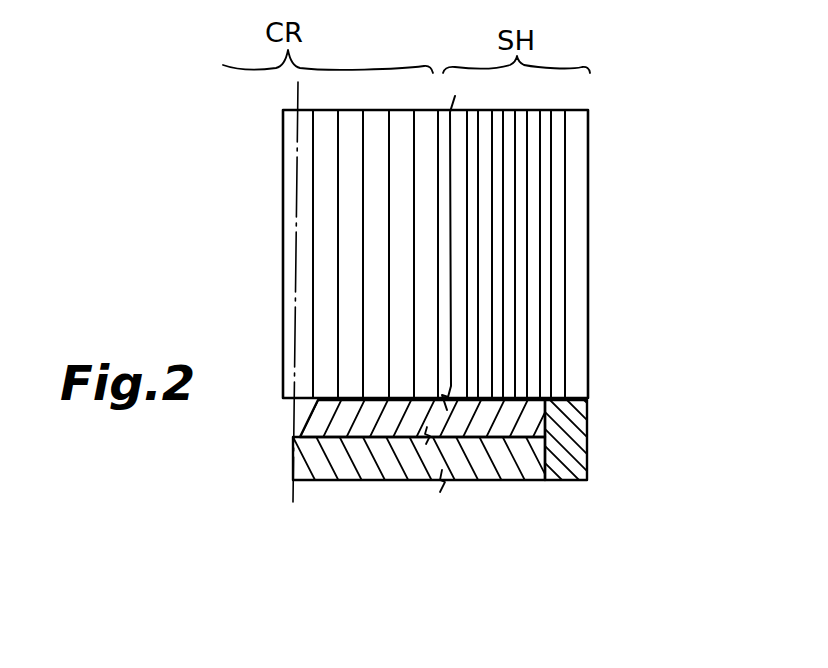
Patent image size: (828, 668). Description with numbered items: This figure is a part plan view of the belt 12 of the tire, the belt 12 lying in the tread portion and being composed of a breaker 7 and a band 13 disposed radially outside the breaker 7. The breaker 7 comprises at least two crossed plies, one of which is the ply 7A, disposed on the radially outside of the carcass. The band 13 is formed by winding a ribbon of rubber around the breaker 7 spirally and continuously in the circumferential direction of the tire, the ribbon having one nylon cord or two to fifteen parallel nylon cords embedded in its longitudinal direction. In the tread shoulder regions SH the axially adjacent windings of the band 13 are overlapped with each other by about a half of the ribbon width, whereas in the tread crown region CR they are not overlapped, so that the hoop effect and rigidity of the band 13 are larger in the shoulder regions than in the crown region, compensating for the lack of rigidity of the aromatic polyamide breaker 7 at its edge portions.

The breaker 7 is at (480, 497).
The breaker ply 7A is at (528, 445).
The belt 12 is at (265, 200).
The band 13 is at (580, 236).